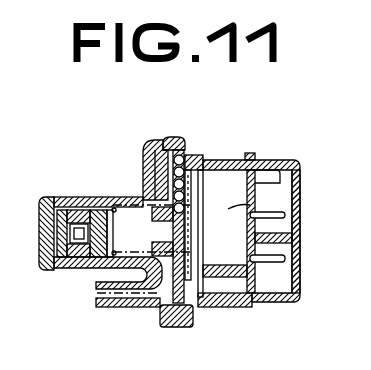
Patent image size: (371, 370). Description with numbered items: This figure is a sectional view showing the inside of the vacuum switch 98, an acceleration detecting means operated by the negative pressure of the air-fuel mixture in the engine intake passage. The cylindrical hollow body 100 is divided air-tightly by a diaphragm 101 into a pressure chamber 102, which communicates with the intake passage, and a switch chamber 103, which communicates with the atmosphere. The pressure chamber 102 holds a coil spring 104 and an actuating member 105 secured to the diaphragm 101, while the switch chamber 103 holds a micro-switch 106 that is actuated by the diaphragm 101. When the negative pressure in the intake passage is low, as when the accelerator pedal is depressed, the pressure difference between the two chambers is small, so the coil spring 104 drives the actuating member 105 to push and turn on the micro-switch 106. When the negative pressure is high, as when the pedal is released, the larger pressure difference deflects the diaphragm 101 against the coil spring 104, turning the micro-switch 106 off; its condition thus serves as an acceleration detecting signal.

The vacuum switch 98 is at (243, 137).
The cylindrical hollow body 100 is at (146, 150).
The diaphragm 101 is at (205, 152).
The pressure chamber 102 is at (162, 305).
The switch chamber 103 is at (226, 288).
The coil spring 104 is at (118, 197).
The actuating member 105 is at (197, 307).
The micro-switch 106 is at (300, 203).